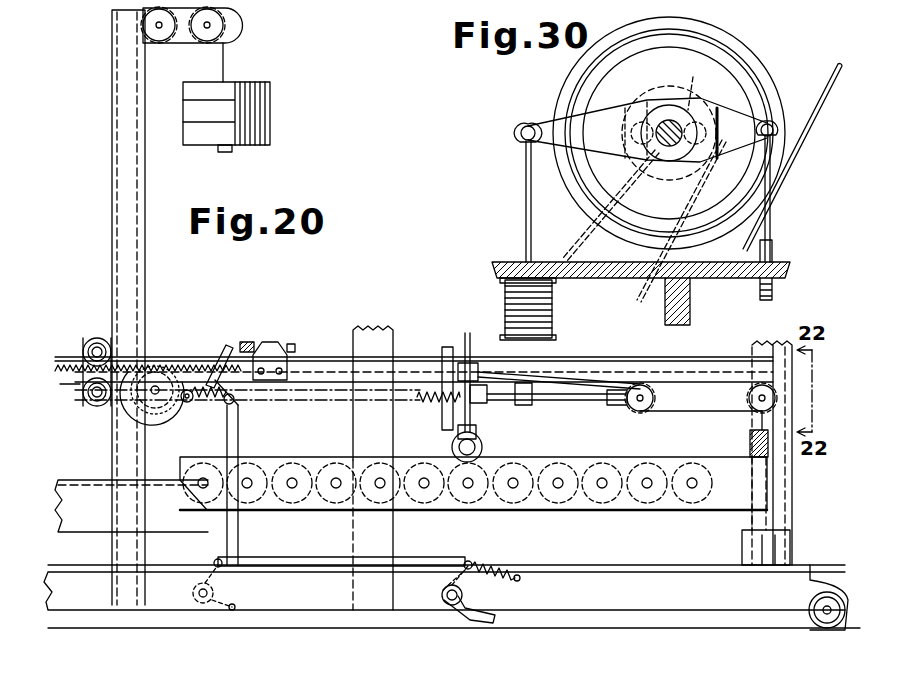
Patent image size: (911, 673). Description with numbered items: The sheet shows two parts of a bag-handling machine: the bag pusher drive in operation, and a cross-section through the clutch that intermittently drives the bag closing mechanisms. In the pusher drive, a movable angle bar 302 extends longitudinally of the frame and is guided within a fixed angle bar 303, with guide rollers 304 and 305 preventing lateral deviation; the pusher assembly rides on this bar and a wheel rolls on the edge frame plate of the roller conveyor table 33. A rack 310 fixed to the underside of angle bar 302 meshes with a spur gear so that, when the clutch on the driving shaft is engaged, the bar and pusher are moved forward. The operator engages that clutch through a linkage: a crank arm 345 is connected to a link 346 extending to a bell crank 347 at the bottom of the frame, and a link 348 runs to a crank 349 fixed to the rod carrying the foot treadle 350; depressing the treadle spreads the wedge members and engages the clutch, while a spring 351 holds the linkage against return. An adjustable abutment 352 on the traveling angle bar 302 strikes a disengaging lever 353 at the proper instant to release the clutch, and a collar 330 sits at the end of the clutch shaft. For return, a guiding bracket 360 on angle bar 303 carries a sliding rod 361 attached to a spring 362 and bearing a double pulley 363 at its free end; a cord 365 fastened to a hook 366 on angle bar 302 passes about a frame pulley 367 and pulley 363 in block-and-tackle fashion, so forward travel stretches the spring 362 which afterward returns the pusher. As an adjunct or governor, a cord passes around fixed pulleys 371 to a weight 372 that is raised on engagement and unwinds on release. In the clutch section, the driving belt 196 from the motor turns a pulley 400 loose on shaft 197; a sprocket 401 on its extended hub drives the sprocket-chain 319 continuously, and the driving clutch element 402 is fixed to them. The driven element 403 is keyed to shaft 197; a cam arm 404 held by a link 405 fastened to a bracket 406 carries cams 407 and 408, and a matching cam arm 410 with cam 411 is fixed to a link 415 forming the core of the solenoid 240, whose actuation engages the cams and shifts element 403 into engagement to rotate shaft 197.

In FIG. 20, the fixed pulleys 371 is at (197, 60).
In FIG. 20, the weight 372 is at (270, 136).
In FIG. 20, the angle bar 303 is at (303, 358).
In FIG. 20, the guide rollers 304 is at (97, 338).
In FIG. 20, the movable angle bar 302 is at (80, 350).
In FIG. 20, the guide rollers 305 is at (95, 400).
In FIG. 20, the rack 310 is at (84, 380).
In FIG. 20, the disengaging lever 353 is at (222, 345).
In FIG. 20, the adjustable abutment 352 is at (245, 342).
In FIG. 20, the crank arm 345 is at (220, 406).
In FIG. 20, the link 346 is at (238, 438).
In FIG. 20, the hook 366 is at (482, 363).
In FIG. 20, the spring 362 is at (430, 400).
In FIG. 20, the guiding bracket 360 is at (487, 400).
In FIG. 20, the sliding rod 361 is at (560, 399).
In FIG. 20, the cord 365 is at (580, 374).
In FIG. 20, the double pulley 363 is at (633, 409).
In FIG. 20, the pulley 367 is at (757, 409).
In FIG. 20, the roller conveyor table 33 is at (498, 512).
In FIG. 20, the link 348 is at (300, 558).
In FIG. 20, the bell crank 347 is at (215, 566).
In FIG. 20, the spring 351 is at (480, 566).
In FIG. 20, the crank 349 is at (446, 580).
In FIG. 20, the foot treadle 350 is at (477, 626).
In FIG. 20, the collar 330 is at (268, 662).
In FIG. 30, the pulley 400 is at (755, 70).
In FIG. 30, the driving element of clutch 402 is at (699, 43).
In FIG. 30, the driven element of clutch 403 is at (709, 70).
In FIG. 30, the shaft 197 is at (664, 124).
In FIG. 30, the sprocket 401 is at (656, 182).
In FIG. 30, the cam 408 is at (626, 170).
In FIG. 30, the cam 407 is at (686, 87).
In FIG. 30, the cam arm 404 is at (725, 118).
In FIG. 30, the matching cam 411 is at (739, 143).
In FIG. 30, the matching cam arm 410 is at (547, 125).
In FIG. 30, the link 415 is at (526, 184).
In FIG. 30, the link 405 is at (771, 227).
In FIG. 30, the driving belt 196 is at (826, 92).
In FIG. 30, the sprocket-chain 319 is at (583, 226).
In FIG. 30, the bracket 406 is at (790, 270).
In FIG. 30, the solenoid 240 is at (512, 298).